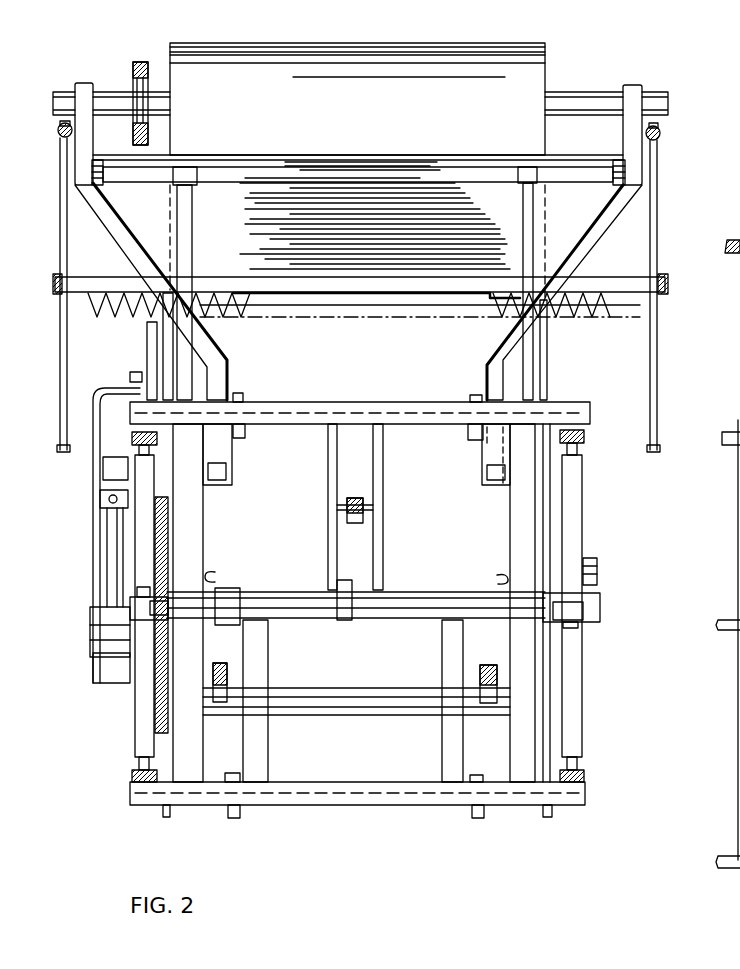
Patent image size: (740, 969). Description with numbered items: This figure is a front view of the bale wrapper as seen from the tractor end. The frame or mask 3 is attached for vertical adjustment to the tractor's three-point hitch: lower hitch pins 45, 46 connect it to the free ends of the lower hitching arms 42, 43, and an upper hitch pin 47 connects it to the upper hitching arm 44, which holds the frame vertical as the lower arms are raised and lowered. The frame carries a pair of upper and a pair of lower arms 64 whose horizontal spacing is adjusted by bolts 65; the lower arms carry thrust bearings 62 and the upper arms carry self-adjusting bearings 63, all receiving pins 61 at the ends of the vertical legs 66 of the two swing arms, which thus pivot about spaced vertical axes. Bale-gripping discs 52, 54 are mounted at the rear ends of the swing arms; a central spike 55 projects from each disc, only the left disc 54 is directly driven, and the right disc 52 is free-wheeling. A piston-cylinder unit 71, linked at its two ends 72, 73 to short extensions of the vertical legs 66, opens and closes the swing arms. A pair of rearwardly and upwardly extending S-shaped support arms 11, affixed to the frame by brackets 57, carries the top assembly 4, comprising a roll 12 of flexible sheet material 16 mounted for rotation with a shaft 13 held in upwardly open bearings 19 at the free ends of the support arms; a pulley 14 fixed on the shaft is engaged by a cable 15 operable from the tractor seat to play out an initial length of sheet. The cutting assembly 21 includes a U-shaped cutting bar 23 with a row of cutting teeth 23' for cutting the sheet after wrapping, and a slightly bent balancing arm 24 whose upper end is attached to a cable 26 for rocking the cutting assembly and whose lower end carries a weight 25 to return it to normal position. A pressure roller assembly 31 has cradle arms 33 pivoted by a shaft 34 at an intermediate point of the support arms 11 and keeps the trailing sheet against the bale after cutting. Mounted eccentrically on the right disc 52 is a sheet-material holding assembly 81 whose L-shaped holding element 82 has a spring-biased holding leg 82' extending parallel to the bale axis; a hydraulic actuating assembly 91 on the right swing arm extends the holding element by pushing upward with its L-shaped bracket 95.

The frame 3 is at (416, 519).
The top assembly 4 is at (690, 167).
The S-shaped support arms 11 is at (215, 362).
The roll of flexible covering material 12 is at (481, 45).
The shaft 13 is at (588, 93).
The pulley 14 is at (137, 78).
The cable 15 is at (141, 62).
The support post 16 is at (518, 214).
The bearing block 19 is at (83, 83).
The cutting assembly 21 is at (59, 255).
The cutting bar 23 is at (169, 318).
The cutting teeth 23' is at (565, 321).
The balancing arm 24 is at (68, 340).
The weight 25 is at (67, 453).
The cable 26 is at (60, 140).
The pressure roller assembly 31 is at (200, 222).
The cradle arms 33 is at (192, 244).
The shaft 34 is at (122, 175).
The lower hitching arm 42 is at (220, 663).
The lower hitching arm 43 is at (487, 665).
The upper hitching arm 44 is at (359, 498).
The lower hitch pin 45 is at (237, 690).
The lower hitch pin 46 is at (472, 688).
The upper hitch pin 47 is at (370, 508).
The right bale-gripping disc 52 is at (168, 552).
The left bale-gripping disc 54 is at (535, 525).
The central spike 55 is at (215, 575).
The brackets 57 is at (217, 448).
The pins 61 is at (138, 450).
The thrust bearings 62 is at (132, 777).
The self-adjusting bearings 63 is at (150, 432).
The upper and lower arms 64 is at (272, 402).
The bolts 65 is at (238, 394).
The vertical legs 66 is at (147, 518).
The piston-cylinder unit 71 is at (308, 631).
The end 72 is at (138, 596).
The end 73 is at (568, 616).
The sheet-material holding assembly 81 is at (739, 736).
The L-shaped holding element 82 is at (730, 268).
The holding leg 82' is at (470, 392).
The hydraulic actuating assembly 91 is at (105, 548).
The L-shaped bracket 95 is at (93, 400).